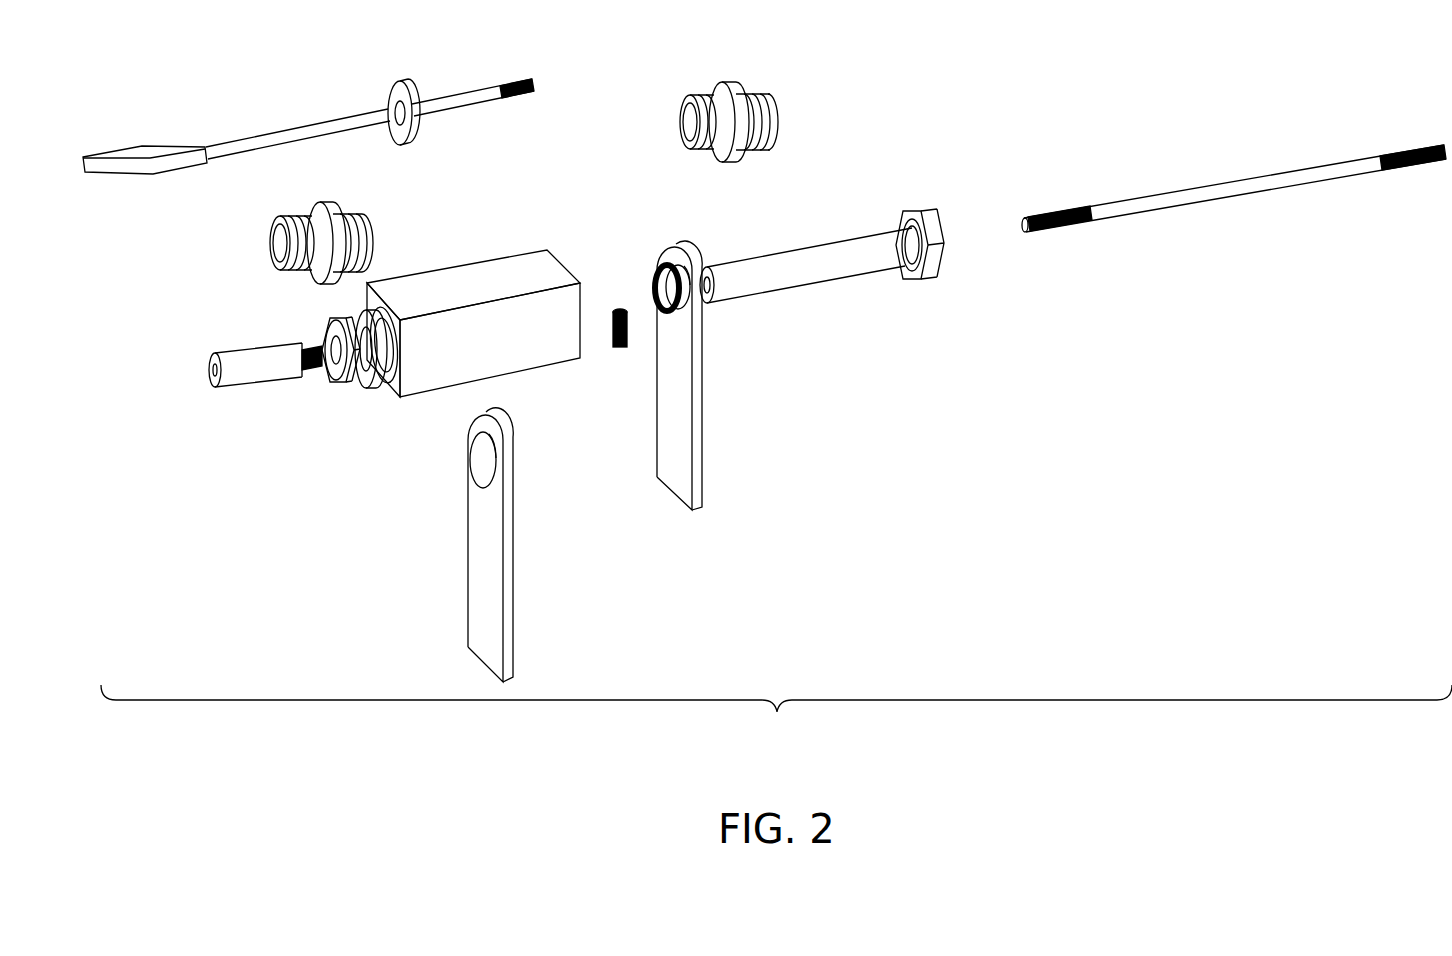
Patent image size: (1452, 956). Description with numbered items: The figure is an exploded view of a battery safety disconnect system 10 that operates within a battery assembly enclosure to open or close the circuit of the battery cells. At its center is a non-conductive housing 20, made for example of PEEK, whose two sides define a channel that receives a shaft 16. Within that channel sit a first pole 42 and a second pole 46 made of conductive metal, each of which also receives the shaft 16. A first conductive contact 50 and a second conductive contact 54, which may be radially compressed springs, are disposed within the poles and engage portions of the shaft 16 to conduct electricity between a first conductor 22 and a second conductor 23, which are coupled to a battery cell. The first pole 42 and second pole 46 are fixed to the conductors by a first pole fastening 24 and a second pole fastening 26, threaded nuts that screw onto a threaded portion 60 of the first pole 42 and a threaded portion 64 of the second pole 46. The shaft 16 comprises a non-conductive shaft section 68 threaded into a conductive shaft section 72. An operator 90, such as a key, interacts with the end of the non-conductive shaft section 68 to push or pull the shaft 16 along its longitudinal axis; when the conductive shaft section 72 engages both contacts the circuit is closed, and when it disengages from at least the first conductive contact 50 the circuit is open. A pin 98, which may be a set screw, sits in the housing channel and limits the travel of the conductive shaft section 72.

The battery safety disconnect system 10 is at (780, 722).
The shaft 16 is at (1238, 186).
The housing 20 is at (510, 268).
The first conductor 22 is at (670, 467).
The second conductor 23 is at (483, 555).
The first pole fastening 24 is at (915, 210).
The second pole fastening 26 is at (338, 386).
The first pole 42 is at (718, 88).
The second pole 46 is at (312, 208).
The first conductive contact 50 is at (655, 282).
The second conductive contact 54 is at (372, 390).
The threaded portion 60 is at (756, 92).
The threaded portion 64 is at (273, 224).
The non-conductive shaft section 68 is at (255, 380).
The conductive shaft section 72 is at (810, 262).
The operator 90 is at (318, 127).
The pin 98 is at (620, 348).